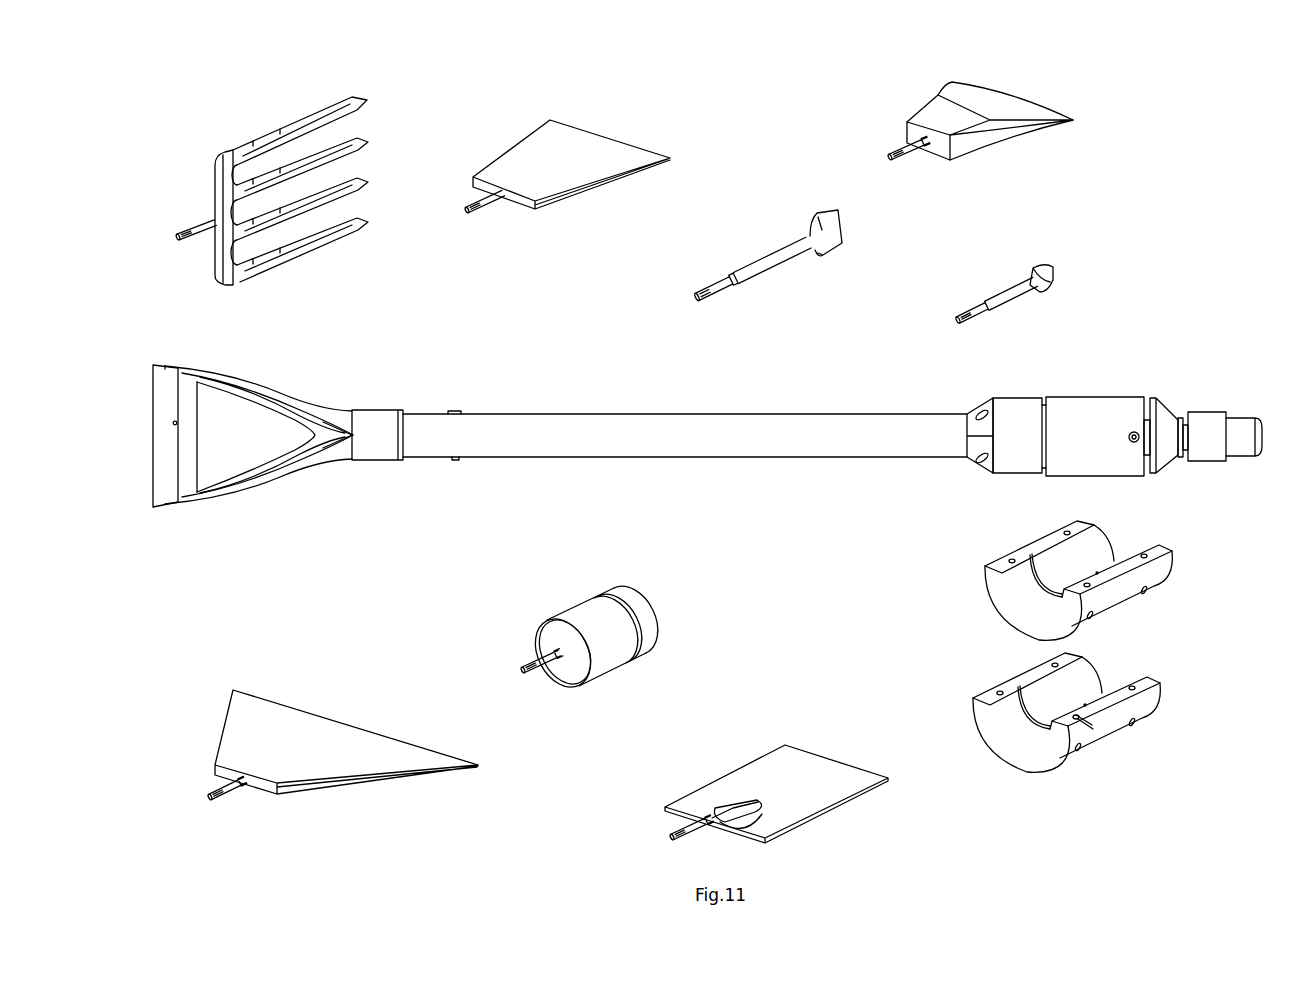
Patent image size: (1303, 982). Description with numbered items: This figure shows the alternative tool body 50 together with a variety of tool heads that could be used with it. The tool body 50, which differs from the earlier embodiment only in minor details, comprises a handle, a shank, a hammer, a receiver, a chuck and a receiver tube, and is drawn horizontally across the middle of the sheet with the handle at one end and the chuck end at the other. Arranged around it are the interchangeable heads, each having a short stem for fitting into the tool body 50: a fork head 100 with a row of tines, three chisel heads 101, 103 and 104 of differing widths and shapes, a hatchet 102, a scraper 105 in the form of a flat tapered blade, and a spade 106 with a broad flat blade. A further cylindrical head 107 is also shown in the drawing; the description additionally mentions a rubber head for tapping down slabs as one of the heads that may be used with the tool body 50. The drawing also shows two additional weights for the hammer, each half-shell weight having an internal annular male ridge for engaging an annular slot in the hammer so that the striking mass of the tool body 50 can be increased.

The tool body 50 is at (446, 356).
The fork head 100 is at (368, 101).
The chisel head 101 is at (607, 135).
The hatchet 102 is at (928, 103).
The chisel head 103 is at (757, 258).
The chisel head 104 is at (1008, 290).
The scraper 105 is at (333, 718).
The spade 106 is at (830, 808).
The cylindrical adapter 107 is at (645, 613).